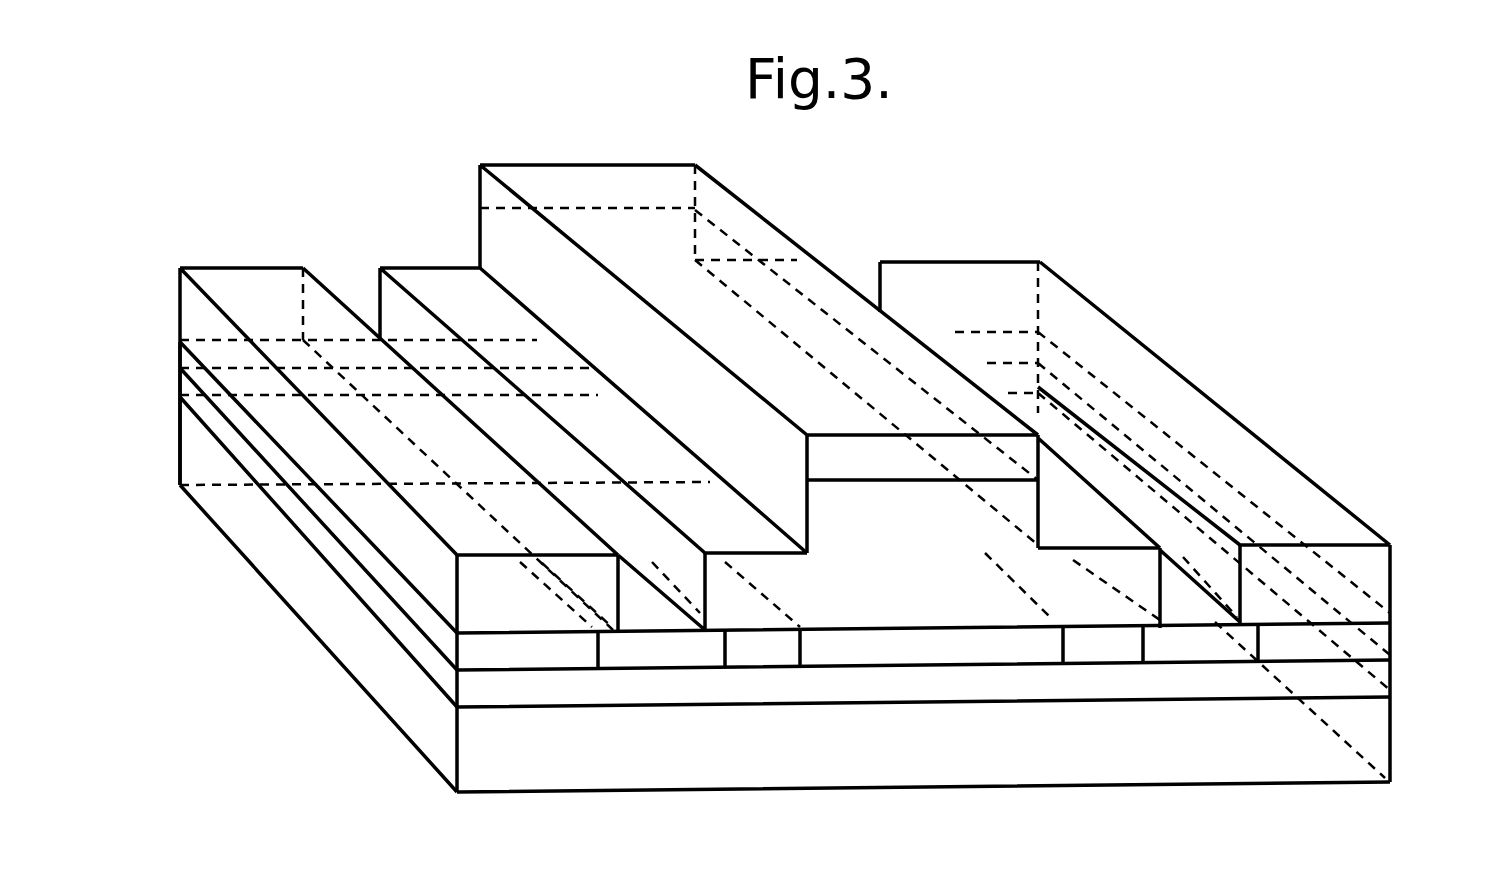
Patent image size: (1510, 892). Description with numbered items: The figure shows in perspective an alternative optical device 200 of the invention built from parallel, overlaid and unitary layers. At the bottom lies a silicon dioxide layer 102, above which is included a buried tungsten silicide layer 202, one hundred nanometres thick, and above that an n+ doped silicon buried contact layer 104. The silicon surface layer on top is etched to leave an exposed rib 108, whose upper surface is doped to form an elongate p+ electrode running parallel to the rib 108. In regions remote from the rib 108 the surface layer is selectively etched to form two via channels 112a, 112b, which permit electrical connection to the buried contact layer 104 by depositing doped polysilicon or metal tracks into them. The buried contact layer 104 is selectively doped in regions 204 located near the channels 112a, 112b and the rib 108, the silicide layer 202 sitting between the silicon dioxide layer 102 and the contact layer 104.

The optical device 200 is at (868, 231).
The rib 108 is at (507, 263).
The via channel 112a is at (645, 613).
The via channel 112b is at (1190, 603).
The n+ doped silicon buried contact layer 104 is at (1399, 643).
The selectively doped regions 204 is at (702, 650).
The buried tungsten silicide layer 202 is at (840, 690).
The silicon dioxide layer 102 is at (520, 748).